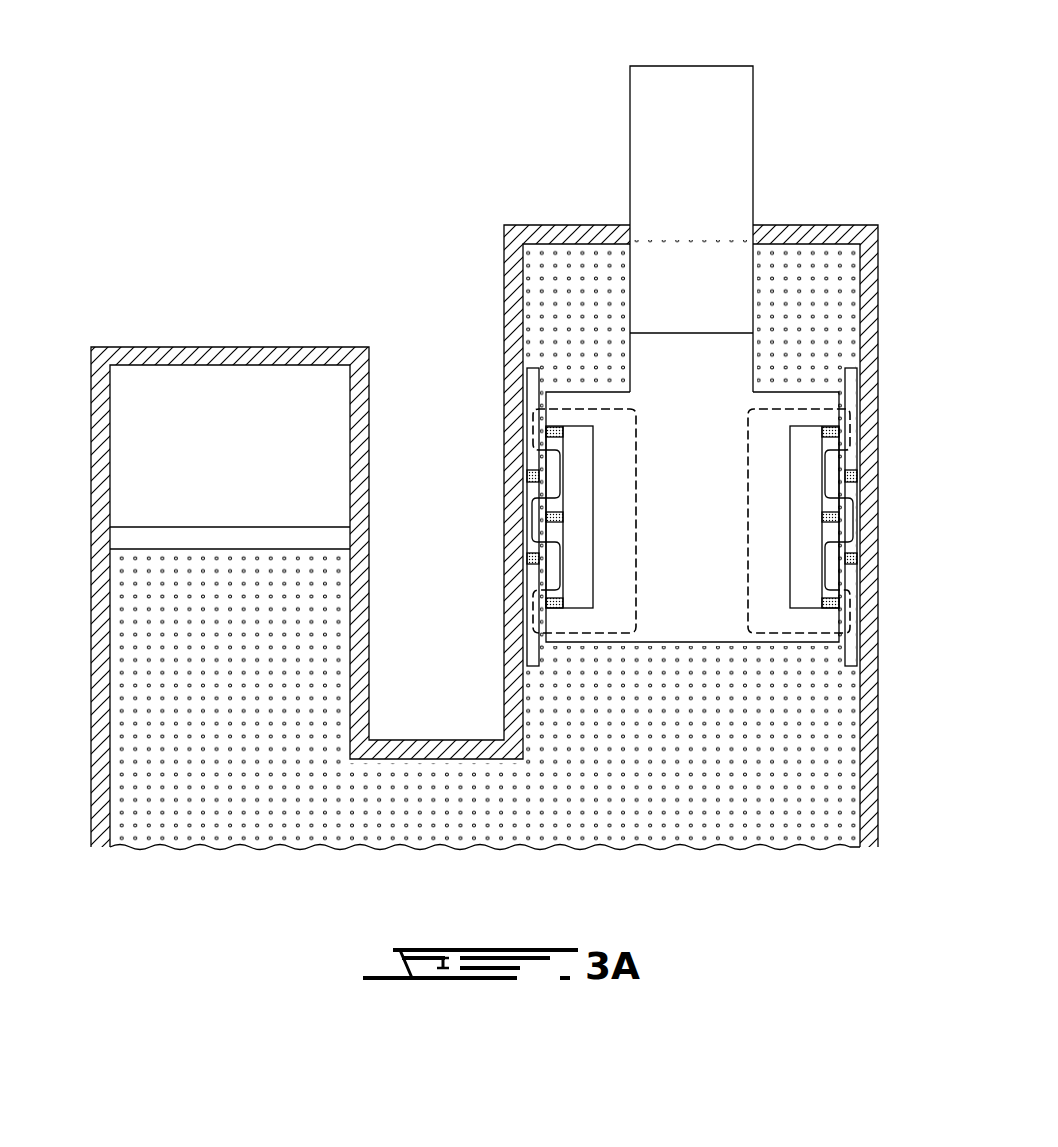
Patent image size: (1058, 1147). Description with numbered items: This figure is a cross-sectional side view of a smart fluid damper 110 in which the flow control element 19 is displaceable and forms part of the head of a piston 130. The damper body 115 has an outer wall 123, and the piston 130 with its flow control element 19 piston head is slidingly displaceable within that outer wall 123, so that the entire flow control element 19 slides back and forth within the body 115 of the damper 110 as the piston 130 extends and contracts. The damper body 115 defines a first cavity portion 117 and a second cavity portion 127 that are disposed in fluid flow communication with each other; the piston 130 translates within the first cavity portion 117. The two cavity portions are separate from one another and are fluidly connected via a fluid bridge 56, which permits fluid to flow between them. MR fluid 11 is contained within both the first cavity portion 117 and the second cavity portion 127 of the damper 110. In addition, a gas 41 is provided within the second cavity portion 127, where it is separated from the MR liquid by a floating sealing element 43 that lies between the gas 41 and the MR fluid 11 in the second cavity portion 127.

The damper 110 is at (484, 138).
The piston 130 is at (760, 132).
The flow control element 19 is at (757, 380).
The damper body 115 is at (885, 316).
The gas 41 is at (144, 396).
The gas-liquid interface 43 is at (150, 533).
The fluid bridge 56 is at (438, 740).
The second cavity portion 127 is at (244, 743).
The first cavity portion 117 is at (720, 743).
The outer wall 123 is at (866, 730).
The MR fluid 11 is at (143, 795).